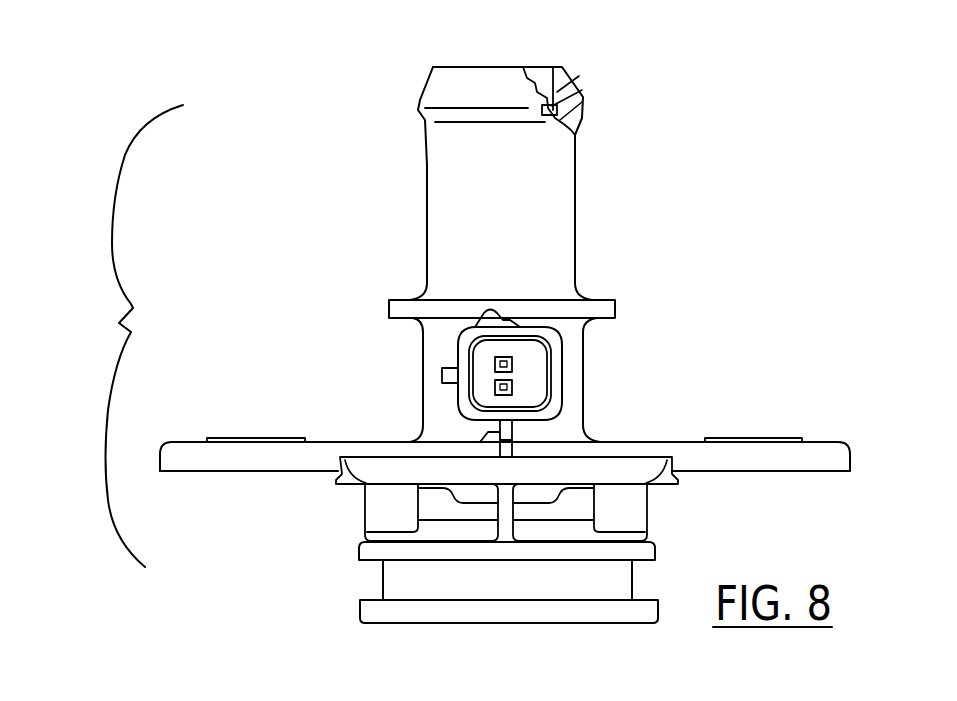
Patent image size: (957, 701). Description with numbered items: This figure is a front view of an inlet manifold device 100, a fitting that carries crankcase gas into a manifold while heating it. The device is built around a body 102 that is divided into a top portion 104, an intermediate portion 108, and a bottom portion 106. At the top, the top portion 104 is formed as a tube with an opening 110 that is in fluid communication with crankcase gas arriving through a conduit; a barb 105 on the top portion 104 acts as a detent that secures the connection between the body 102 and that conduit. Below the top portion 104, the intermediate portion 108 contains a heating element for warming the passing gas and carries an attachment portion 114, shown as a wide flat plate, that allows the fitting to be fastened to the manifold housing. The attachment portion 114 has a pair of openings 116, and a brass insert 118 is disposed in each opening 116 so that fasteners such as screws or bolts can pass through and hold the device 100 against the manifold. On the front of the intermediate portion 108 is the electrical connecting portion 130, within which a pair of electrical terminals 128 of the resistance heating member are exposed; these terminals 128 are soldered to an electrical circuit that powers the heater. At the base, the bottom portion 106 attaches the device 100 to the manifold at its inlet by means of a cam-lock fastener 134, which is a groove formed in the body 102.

The inlet manifold device 100 is at (607, 212).
The body 102 is at (396, 349).
The top portion 104 is at (437, 80).
The barb 105 is at (425, 118).
The bottom portion 106 is at (633, 573).
The intermediate portion 108 is at (117, 336).
The opening 110 is at (523, 65).
The attachment portion 114 is at (679, 441).
The openings 116 is at (238, 436).
The brass insert 118 is at (256, 440).
The electrical terminals 128 is at (513, 388).
The electrical connecting portion 130 is at (553, 338).
The cam-lock fastener 134 is at (383, 585).